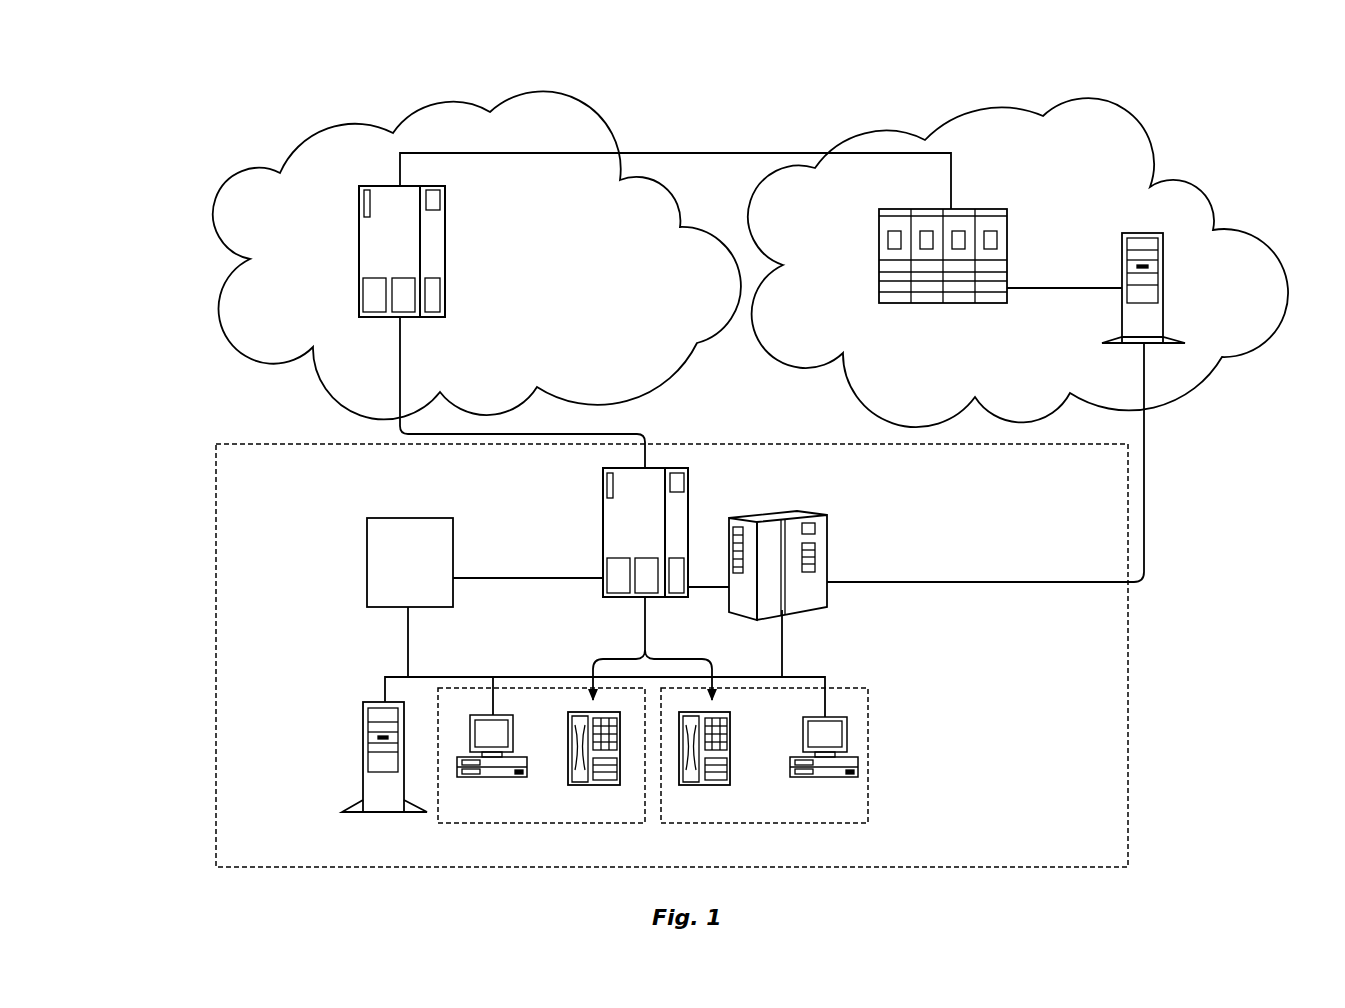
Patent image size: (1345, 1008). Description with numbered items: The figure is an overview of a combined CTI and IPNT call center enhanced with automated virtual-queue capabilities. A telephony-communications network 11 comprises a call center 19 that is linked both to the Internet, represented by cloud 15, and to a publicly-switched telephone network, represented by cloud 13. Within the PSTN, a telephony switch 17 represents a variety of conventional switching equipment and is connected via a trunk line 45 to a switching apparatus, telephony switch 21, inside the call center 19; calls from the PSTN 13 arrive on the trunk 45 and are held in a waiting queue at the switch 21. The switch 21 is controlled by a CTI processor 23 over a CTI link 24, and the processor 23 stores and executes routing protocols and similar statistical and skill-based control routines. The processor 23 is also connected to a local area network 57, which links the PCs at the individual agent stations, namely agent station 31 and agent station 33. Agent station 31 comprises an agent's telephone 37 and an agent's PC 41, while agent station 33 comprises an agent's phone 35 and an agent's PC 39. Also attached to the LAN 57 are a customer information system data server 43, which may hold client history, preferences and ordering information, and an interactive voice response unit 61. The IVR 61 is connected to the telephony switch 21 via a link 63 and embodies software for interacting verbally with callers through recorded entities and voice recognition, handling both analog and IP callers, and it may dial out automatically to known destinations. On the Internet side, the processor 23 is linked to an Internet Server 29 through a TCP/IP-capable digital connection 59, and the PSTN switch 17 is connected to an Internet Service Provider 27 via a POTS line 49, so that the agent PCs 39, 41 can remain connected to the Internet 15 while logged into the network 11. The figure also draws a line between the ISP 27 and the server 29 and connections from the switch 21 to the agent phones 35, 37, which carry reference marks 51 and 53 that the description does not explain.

The telephony-communications network 11 is at (1201, 141).
The publicly-switched telephone network (PSTN) 13 is at (221, 247).
The Internet 15 is at (1259, 367).
The telephony switch 17 is at (359, 270).
The call center 19 is at (1147, 597).
The telephony switch 21 is at (603, 558).
The CTI processor 23 is at (827, 570).
The CTI link 24 is at (713, 587).
The Internet Service Provider (ISP) 27 is at (967, 209).
The Internet Server 29 is at (1122, 277).
The agent station 31 is at (868, 750).
The agent station 33 is at (520, 823).
The agent's phone 35 is at (568, 745).
The agent's telephone 37 is at (730, 738).
The agent's PC 39 is at (513, 777).
The agent's PC 41 is at (840, 777).
The customer information system (CIS) data server 43 is at (363, 765).
The trunk line 45 is at (400, 392).
The POTS line 49 is at (708, 153).
The Internet connection 51 is at (1090, 292).
The switch to agent telephone connections 53 is at (643, 642).
The local area network (LAN) 57 is at (487, 677).
The TCP/IP-capable digital connection 59 is at (1078, 582).
The interactive voice response (IVR) unit 61 is at (367, 586).
The link 63 is at (507, 577).